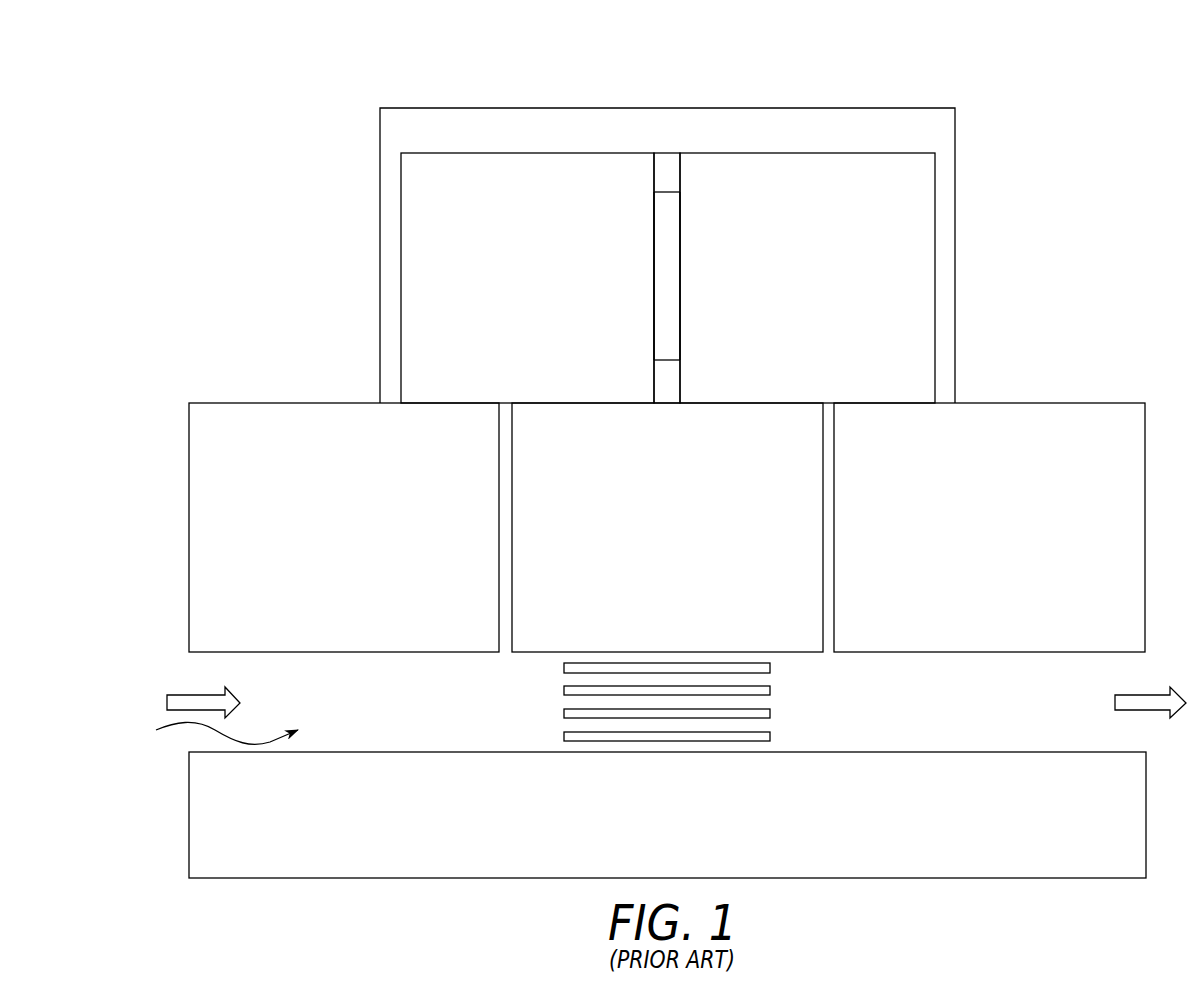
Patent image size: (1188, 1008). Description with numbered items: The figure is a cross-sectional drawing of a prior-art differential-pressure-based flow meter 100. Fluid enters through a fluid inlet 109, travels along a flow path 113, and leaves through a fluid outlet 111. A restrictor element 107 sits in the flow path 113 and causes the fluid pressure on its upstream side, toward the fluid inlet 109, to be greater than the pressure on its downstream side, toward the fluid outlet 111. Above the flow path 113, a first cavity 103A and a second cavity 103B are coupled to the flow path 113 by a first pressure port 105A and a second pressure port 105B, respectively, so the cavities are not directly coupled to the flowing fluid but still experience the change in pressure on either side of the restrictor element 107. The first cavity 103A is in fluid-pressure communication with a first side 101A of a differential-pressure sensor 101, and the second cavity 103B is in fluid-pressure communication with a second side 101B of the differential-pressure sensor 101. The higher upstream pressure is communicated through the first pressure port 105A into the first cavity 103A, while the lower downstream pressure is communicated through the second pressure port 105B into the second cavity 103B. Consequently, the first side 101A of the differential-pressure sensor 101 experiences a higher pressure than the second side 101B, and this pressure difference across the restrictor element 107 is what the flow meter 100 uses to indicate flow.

The differential-pressure-based flow meter 100 is at (188, 102).
The differential-pressure sensor 101 is at (636, 267).
The first side of the differential-pressure sensor 101A is at (654, 218).
The second side of the differential-pressure sensor 101B is at (680, 218).
The first cavity 103A is at (520, 183).
The second cavity 103B is at (805, 183).
The first pressure port 105A is at (505, 400).
The second pressure port 105B is at (828, 400).
The restrictor element 107 is at (564, 714).
The fluid inlet 109 is at (181, 695).
The fluid outlet 111 is at (1128, 695).
The flow path 113 is at (208, 732).